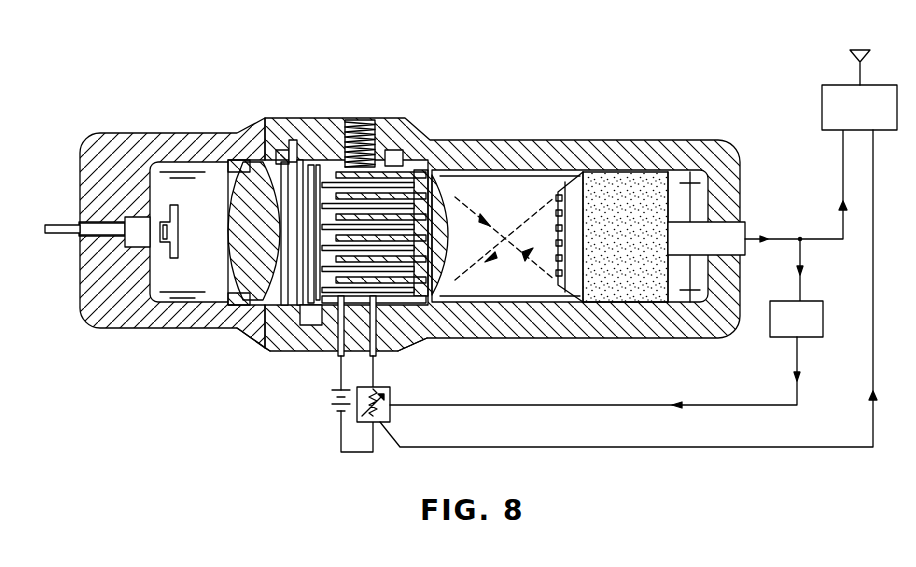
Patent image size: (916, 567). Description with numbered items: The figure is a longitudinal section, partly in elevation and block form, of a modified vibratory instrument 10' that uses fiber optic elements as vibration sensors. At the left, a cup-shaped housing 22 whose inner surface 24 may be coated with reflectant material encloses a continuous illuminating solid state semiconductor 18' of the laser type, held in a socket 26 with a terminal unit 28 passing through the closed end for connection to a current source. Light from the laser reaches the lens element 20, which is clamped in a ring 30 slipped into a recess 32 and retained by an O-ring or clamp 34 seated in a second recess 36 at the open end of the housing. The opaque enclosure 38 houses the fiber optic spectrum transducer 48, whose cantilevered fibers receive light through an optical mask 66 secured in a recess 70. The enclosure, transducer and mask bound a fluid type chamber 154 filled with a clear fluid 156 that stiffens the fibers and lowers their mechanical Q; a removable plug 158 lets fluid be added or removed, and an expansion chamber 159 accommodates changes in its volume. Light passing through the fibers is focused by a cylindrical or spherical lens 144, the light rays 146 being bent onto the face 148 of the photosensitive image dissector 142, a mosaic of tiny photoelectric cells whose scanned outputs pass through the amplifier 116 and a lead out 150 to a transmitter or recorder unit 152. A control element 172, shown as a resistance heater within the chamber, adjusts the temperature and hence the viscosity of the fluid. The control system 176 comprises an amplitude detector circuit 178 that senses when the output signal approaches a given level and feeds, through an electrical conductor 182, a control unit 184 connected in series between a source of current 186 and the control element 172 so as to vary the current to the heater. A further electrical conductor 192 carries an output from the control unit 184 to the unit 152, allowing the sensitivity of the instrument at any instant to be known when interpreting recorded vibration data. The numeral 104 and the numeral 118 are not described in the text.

The vibratory instrument 10' is at (470, 262).
The housing 22 is at (162, 133).
The housing tube 104 is at (598, 140).
The second recess 36 is at (263, 322).
The control element 172 is at (410, 330).
The terminal unit 28 is at (72, 222).
The socket 26 is at (149, 240).
The continuous illuminating solid state semiconductor 18' is at (185, 229).
The recess 32 is at (228, 200).
The inner surface 24 is at (190, 296).
The lens element 20 is at (226, 243).
The ring 30 is at (232, 300).
The O-ring or clamp 34 is at (282, 148).
The optical mask 66 is at (298, 150).
The enclosure 38 is at (342, 118).
The removable plug 158 is at (348, 120).
The expansion chamber 159 is at (402, 150).
The fiber optic spectrum transducer 48 is at (386, 180).
The fluid type chamber 154 is at (446, 302).
The cylindrical or spherical lens 144 is at (478, 216).
The photosensitive image dissector 142 is at (563, 198).
The face of the image dissector 148 is at (556, 220).
The light rays 146 is at (554, 264).
The amplifier 116 is at (630, 247).
The output lead 118 is at (712, 239).
The lead out 150 is at (796, 240).
The transmitter or recorder unit 152 is at (873, 118).
The amplitude detector circuit 178 is at (811, 330).
The recess 70 is at (326, 340).
The clear fluid 156 is at (338, 345).
The control system 176 is at (298, 404).
The source of current 186 is at (346, 406).
The control unit 184 is at (392, 396).
The electrical conductor 182 is at (724, 410).
The electrical conductor 192 is at (684, 450).